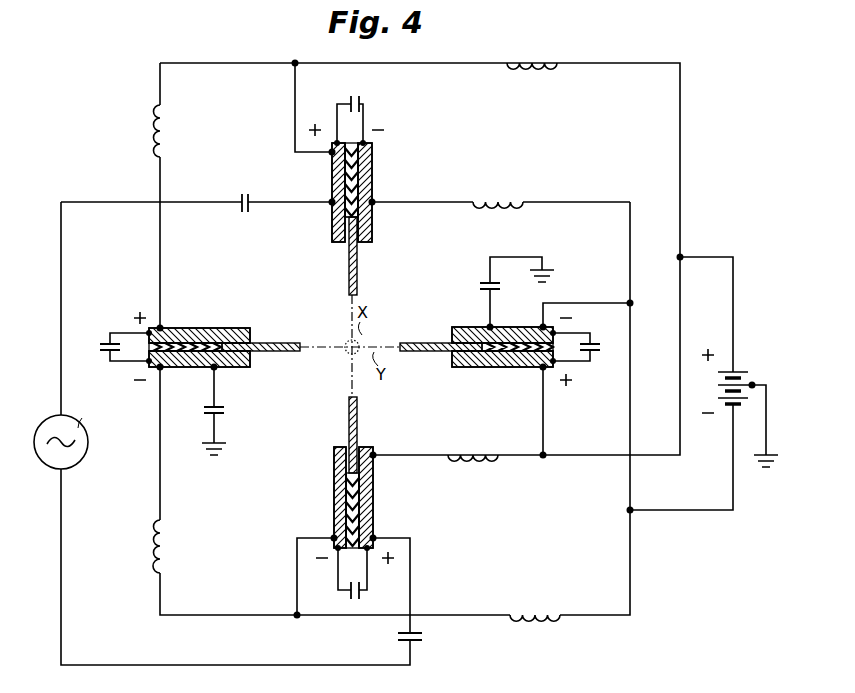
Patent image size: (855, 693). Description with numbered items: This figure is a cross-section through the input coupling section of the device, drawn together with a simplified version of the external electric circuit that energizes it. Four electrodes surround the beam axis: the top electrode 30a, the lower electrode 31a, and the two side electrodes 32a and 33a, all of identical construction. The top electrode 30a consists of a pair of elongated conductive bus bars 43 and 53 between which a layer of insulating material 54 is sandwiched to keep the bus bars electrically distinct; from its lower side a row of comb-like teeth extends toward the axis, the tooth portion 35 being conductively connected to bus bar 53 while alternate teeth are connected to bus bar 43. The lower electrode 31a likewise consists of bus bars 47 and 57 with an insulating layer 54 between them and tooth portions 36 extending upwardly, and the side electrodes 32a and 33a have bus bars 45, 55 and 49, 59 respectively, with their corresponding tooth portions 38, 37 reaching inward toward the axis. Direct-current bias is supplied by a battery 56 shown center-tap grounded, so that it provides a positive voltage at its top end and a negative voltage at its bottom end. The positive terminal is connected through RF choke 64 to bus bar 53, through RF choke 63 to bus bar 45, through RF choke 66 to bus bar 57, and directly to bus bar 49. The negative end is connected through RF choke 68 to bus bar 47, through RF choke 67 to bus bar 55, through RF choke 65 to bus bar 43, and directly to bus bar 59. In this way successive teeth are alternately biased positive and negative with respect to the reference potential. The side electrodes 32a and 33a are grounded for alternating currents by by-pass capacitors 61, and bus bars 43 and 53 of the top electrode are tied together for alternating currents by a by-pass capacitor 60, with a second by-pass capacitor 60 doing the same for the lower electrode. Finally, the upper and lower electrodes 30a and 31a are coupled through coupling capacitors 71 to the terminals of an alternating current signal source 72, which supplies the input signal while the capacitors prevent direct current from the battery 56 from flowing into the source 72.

The top electrode 30a is at (367, 181).
The lower electrode 31a is at (333, 497).
The side electrode 32a is at (199, 329).
The side electrode 33a is at (502, 358).
The tooth portion 35 is at (357, 286).
The tooth portion 36 is at (357, 422).
The right arm 37 is at (432, 343).
The left arm 38 is at (290, 334).
The bus bar 43 is at (372, 190).
The bus bar 53 is at (332, 190).
The bus bar 45 is at (170, 328).
The bus bar 55 is at (178, 367).
The bus bar 47 is at (334, 524).
The bus bar 57 is at (373, 524).
The bus bar 49 is at (532, 367).
The bus bar 59 is at (530, 327).
The layer of insulating material 54 is at (348, 150).
The battery 56 is at (740, 370).
The by-pass capacitor 60 is at (357, 100).
The by-pass capacitor 61 is at (216, 408).
The RF choke 63 is at (152, 118).
The RF choke 64 is at (538, 70).
The RF choke 65 is at (500, 206).
The RF choke 66 is at (480, 462).
The RF choke 67 is at (153, 528).
The RF choke 68 is at (536, 610).
The coupling capacitor 71 is at (240, 199).
The alternating current signal source 72 is at (52, 418).